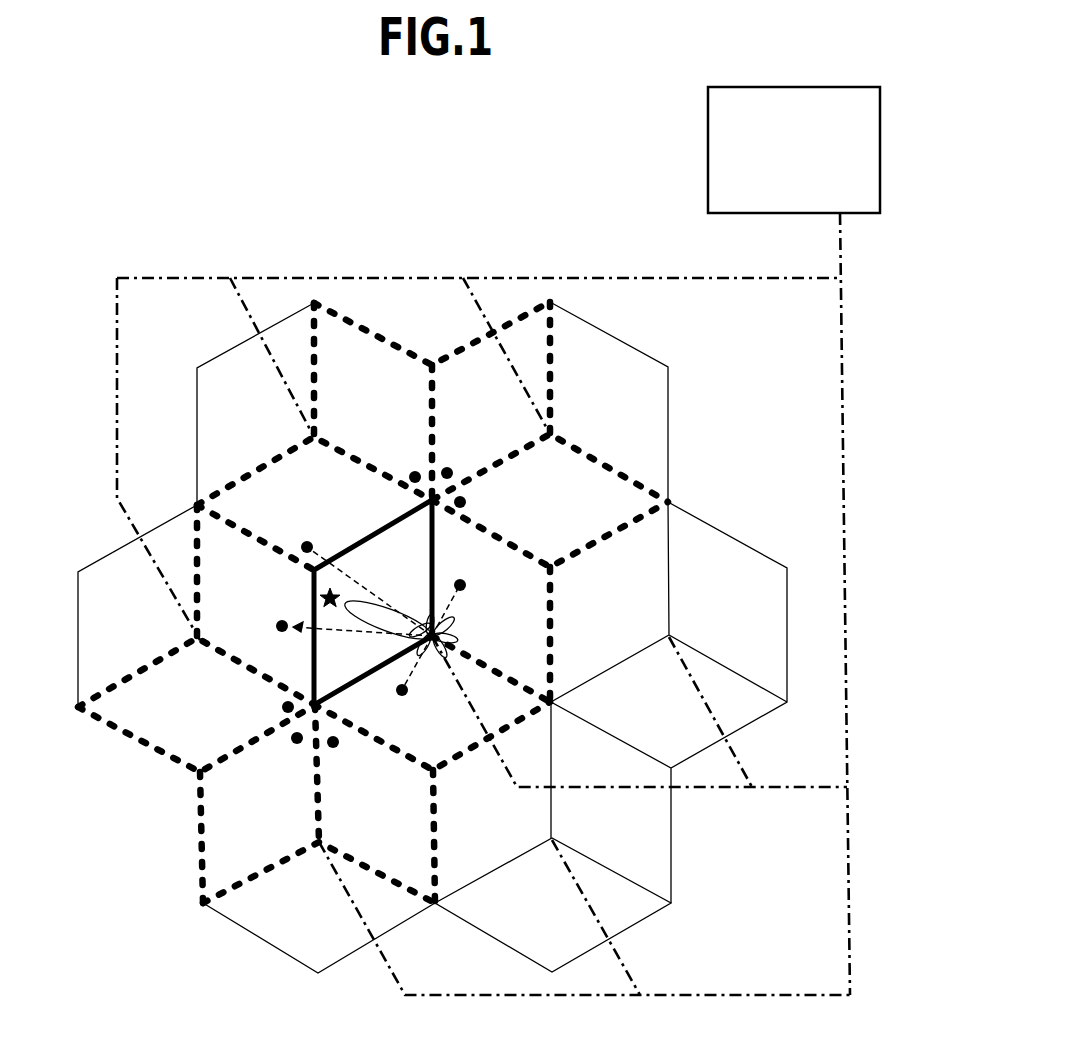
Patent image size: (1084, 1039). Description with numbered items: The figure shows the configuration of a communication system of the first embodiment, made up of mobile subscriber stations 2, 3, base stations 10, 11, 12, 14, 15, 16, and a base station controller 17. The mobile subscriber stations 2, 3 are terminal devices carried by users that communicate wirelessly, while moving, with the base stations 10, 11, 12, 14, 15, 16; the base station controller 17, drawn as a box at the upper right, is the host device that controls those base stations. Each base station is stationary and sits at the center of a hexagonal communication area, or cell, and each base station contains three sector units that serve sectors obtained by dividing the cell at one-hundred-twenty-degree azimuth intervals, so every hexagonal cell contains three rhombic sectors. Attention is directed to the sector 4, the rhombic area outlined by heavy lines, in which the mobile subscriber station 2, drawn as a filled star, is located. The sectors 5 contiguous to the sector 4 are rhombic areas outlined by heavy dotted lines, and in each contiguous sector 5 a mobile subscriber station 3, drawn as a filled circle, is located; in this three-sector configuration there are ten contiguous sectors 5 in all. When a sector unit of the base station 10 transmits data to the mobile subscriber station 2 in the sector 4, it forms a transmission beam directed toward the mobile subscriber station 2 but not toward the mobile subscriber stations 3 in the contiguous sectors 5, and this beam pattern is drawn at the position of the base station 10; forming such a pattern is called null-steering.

The mobile subscriber station 2 is at (322, 600).
The mobile subscriber station 3 is at (447, 472).
The sector 4 is at (417, 543).
The contiguous sector 5 is at (335, 345).
The base station 10 is at (440, 636).
The base station 11 is at (671, 638).
The base station 12 is at (552, 433).
The base station 14 is at (196, 637).
The base station 15 is at (321, 841).
The base station 16 is at (559, 838).
The base station controller 17 is at (718, 183).